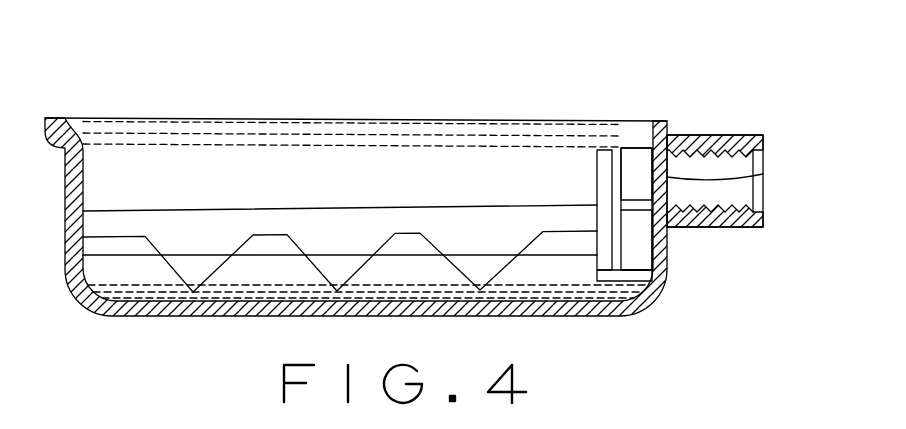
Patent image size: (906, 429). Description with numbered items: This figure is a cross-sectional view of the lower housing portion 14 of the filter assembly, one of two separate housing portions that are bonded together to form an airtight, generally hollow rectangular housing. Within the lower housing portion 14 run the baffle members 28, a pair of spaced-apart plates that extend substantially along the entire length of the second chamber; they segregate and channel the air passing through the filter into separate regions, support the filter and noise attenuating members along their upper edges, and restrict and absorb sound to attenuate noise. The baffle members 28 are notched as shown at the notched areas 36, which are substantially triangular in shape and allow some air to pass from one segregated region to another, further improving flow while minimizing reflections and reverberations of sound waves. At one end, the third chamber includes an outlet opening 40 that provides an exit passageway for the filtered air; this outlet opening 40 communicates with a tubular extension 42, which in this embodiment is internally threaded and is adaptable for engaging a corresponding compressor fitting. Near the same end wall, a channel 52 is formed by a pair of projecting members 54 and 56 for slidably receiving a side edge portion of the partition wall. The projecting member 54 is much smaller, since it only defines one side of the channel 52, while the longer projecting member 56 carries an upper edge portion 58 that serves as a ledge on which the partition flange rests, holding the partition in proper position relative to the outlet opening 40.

The lower housing portion 14 is at (413, 90).
The baffle members 28 is at (562, 272).
The notched areas 36 is at (198, 268).
The outlet opening 40 is at (763, 174).
The tubular extension 42 is at (725, 134).
The channel 52 is at (618, 147).
The projecting member 54 is at (597, 180).
The projecting member 56 is at (637, 237).
The upper edge portion 58 is at (638, 147).